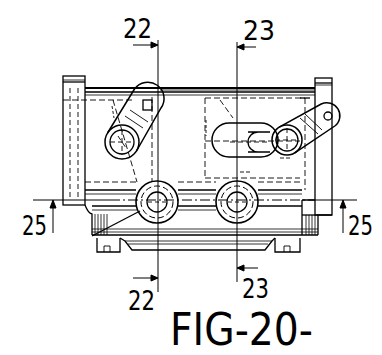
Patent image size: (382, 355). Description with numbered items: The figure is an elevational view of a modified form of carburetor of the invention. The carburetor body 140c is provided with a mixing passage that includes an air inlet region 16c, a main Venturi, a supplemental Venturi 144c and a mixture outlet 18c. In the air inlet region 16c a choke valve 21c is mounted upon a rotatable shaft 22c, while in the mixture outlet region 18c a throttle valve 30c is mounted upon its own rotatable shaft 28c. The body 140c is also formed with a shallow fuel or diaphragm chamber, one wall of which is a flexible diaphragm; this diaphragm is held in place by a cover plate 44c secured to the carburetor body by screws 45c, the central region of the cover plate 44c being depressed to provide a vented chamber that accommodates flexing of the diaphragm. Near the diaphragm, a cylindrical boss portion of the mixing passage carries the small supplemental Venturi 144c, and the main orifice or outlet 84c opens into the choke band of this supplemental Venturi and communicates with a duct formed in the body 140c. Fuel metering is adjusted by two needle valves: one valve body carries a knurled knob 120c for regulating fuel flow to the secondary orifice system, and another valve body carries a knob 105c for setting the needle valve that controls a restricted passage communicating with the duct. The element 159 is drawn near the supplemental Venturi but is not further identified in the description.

The housing end wall 16c is at (305, 97).
The housing side wall 18c is at (67, 168).
The crank arm 21c is at (332, 138).
The shaft rod 22c is at (287, 120).
The crank lever 28c is at (105, 125).
The lever pin 30c is at (112, 108).
The bottom bracket 44c is at (168, 249).
The mounting feet 45c is at (103, 252).
The bearing block 84c is at (248, 172).
The bearing 105c is at (243, 217).
The hatched side flange 120c is at (92, 228).
The top rail 140c is at (172, 88).
The support block 144c is at (286, 158).
The stop member 159 is at (206, 128).